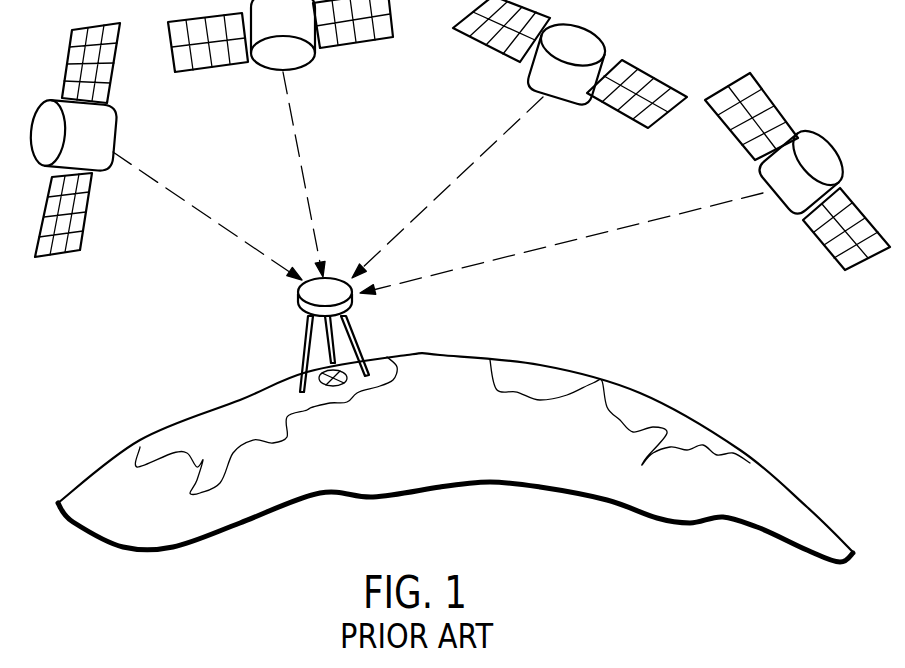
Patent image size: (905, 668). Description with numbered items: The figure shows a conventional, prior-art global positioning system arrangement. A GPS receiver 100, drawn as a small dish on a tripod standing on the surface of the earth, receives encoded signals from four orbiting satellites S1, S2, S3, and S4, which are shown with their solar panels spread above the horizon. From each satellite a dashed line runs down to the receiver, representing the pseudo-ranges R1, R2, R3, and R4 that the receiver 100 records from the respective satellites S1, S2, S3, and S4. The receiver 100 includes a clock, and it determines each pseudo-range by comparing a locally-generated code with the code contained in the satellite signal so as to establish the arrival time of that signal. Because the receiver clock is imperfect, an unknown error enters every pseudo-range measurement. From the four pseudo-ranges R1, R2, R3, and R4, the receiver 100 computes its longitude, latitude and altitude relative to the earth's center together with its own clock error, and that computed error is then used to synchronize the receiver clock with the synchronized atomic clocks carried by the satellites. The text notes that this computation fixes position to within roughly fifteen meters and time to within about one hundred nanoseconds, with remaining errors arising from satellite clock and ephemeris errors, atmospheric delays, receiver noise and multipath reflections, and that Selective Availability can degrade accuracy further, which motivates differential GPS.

The satellite S1 is at (74, 140).
The satellite S2 is at (280, 36).
The satellite S3 is at (570, 64).
The satellite S4 is at (797, 171).
The pseudo-range R1 is at (182, 197).
The pseudo-range R2 is at (298, 148).
The pseudo-range R3 is at (462, 176).
The pseudo-range R4 is at (610, 231).
The GPS receiver 100 is at (298, 305).